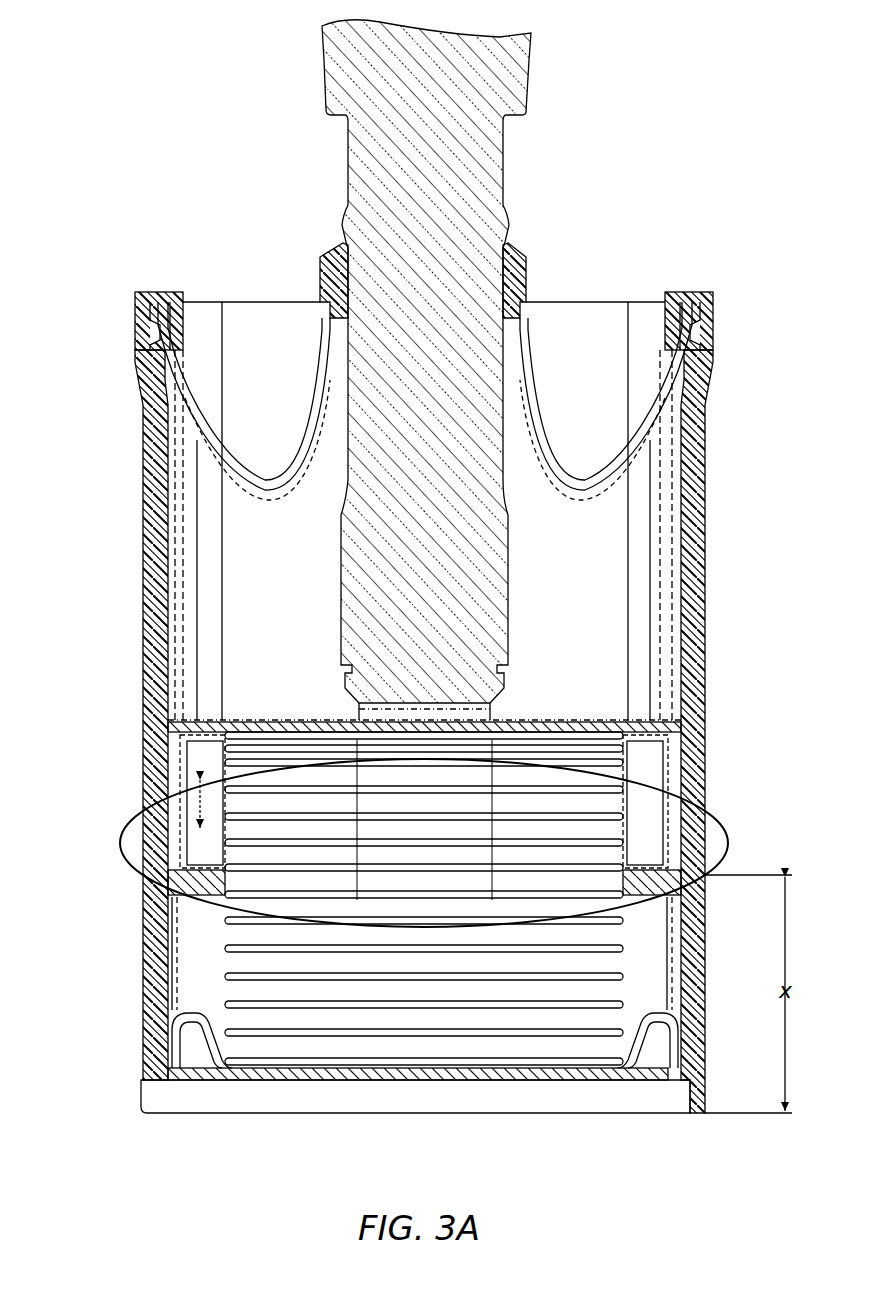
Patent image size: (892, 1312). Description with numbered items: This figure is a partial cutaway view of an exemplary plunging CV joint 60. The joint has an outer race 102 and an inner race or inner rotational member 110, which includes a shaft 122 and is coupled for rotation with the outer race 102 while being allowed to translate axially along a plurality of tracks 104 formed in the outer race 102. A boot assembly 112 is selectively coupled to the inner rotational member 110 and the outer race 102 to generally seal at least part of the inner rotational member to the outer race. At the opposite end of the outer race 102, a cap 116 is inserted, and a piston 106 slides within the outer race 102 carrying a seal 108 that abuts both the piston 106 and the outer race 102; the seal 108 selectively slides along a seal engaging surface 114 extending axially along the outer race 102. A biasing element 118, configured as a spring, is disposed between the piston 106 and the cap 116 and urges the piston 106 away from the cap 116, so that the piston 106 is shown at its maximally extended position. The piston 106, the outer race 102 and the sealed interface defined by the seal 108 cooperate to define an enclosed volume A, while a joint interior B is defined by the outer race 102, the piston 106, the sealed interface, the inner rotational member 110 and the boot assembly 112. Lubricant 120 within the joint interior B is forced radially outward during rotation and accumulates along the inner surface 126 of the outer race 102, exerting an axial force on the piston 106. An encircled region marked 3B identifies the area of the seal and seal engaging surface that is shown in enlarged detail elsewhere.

The plunging CV joint 60 is at (105, 1132).
The outer race 102 is at (143, 640).
The tracks 104 is at (255, 522).
The piston 106 is at (682, 685).
The seal 108 is at (150, 896).
The inner rotational member 110 is at (345, 80).
The boot assembly 112 is at (312, 300).
The seal engaging surface 114 is at (657, 945).
The cap 116 is at (275, 1078).
The biasing element 118 is at (520, 1015).
The lubricant 120 is at (160, 610).
The shaft 122 is at (447, 424).
The inner surface 126 is at (150, 658).
The enclosed volume A is at (700, 918).
The joint interior B is at (630, 490).
The detail view region 3B is at (120, 848).